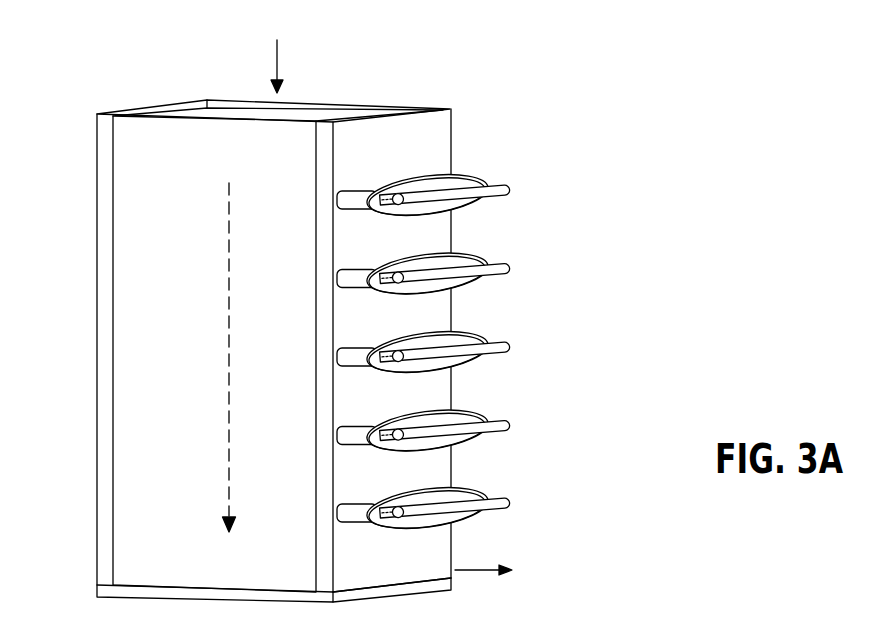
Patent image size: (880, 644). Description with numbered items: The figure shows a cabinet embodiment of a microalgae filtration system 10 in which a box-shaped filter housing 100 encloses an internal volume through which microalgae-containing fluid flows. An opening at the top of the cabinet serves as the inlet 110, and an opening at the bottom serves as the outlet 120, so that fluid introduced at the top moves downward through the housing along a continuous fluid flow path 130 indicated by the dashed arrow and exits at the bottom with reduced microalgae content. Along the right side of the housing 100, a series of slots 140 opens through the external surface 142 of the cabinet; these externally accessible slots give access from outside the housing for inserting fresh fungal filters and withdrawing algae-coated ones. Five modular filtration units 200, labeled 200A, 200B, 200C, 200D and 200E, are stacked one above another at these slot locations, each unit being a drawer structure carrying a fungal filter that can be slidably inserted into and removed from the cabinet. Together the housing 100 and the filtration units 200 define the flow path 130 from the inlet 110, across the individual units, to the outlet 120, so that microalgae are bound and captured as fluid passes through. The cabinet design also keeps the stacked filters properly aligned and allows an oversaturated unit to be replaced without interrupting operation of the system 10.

The microalgae filtration system 10 is at (457, 77).
The filter housing 100 is at (97, 210).
The inlet 110 is at (280, 52).
The outlet 120 is at (512, 570).
The continuous fluid flow path 130 is at (228, 340).
The slots 140 is at (337, 202).
The external surface 142 is at (403, 572).
The modular filtration units 200 is at (593, 180).
The modular filtration unit 200A is at (471, 195).
The modular filtration unit 200B is at (471, 274).
The modular filtration unit 200C is at (457, 352).
The modular filtration unit 200D is at (458, 431).
The modular filtration unit 200E is at (456, 508).